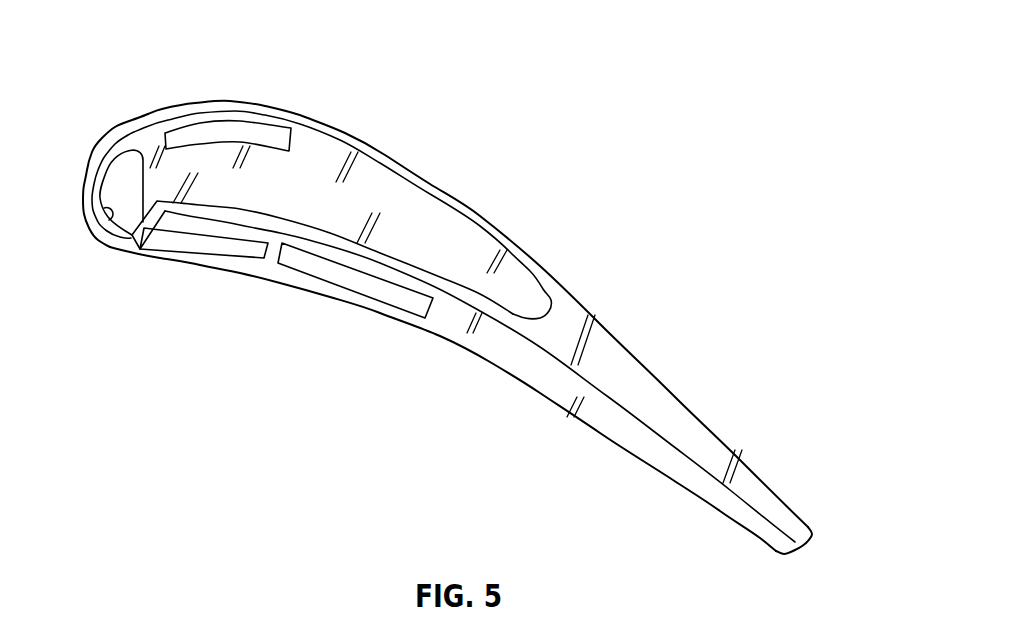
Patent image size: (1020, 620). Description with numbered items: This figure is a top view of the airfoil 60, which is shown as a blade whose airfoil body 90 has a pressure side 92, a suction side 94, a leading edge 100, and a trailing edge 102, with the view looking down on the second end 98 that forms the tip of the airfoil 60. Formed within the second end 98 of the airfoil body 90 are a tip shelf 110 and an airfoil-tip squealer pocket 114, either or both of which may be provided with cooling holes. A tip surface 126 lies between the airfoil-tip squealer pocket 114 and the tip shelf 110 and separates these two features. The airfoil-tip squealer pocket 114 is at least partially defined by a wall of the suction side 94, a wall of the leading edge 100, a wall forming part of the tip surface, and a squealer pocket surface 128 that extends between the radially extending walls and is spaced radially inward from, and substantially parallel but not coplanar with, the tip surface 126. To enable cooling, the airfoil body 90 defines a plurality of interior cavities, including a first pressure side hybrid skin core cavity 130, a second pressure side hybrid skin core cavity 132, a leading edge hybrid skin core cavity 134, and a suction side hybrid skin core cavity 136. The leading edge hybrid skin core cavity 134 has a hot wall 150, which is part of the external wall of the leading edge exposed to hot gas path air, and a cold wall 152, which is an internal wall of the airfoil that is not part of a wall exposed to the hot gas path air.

The airfoil 60 is at (447, 290).
The airfoil body 90 is at (447, 310).
The pressure side 92 is at (437, 341).
The suction side 94 is at (423, 182).
The second end 98 is at (560, 312).
The leading edge 100 is at (86, 195).
The trailing edge 102 is at (810, 532).
The tip shelf 110 is at (728, 498).
The airfoil-tip squealer pocket 114 is at (300, 185).
The tip surface 126 is at (668, 410).
The squealer pocket surface 128 is at (202, 163).
The first pressure side hybrid skin core cavity 130 is at (208, 243).
The second pressure side hybrid skin core cavity 132 is at (336, 270).
The leading edge hybrid skin core cavity 134 is at (134, 178).
The suction side hybrid skin core cavity 136 is at (213, 138).
The hot wall 150 is at (108, 218).
The cold wall 152 is at (122, 180).